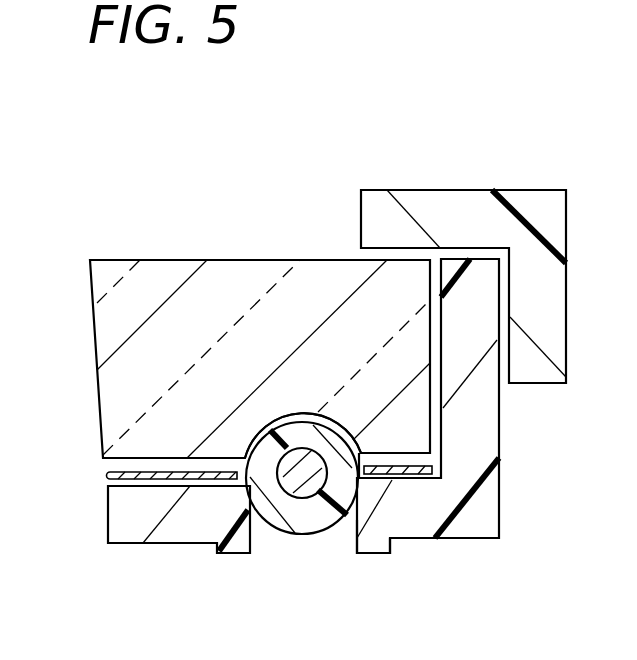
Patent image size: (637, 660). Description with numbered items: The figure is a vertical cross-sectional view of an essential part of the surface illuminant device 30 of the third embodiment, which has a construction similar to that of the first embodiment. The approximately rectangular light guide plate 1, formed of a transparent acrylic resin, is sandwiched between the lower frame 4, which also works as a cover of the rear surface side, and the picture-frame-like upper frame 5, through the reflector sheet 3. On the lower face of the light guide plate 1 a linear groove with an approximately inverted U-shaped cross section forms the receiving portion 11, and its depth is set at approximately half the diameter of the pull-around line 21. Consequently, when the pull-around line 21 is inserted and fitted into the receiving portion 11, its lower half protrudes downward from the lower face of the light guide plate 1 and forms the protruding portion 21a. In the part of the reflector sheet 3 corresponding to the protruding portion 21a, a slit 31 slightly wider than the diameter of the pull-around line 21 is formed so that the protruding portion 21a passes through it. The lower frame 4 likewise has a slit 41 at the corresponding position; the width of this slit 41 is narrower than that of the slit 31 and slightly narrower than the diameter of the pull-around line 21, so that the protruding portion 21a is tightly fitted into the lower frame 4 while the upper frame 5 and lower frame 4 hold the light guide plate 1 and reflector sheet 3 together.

The surface illuminant device 30 is at (303, 100).
The light guide plate 1 is at (163, 283).
The receiving portion 11 is at (298, 423).
The pull-around line 21 is at (268, 428).
The protruding portion 21a is at (283, 527).
The reflector sheet 3 is at (107, 477).
The slit 31 is at (362, 458).
The lower frame 4 is at (413, 523).
The slit 41 is at (356, 530).
The upper frame 5 is at (540, 370).